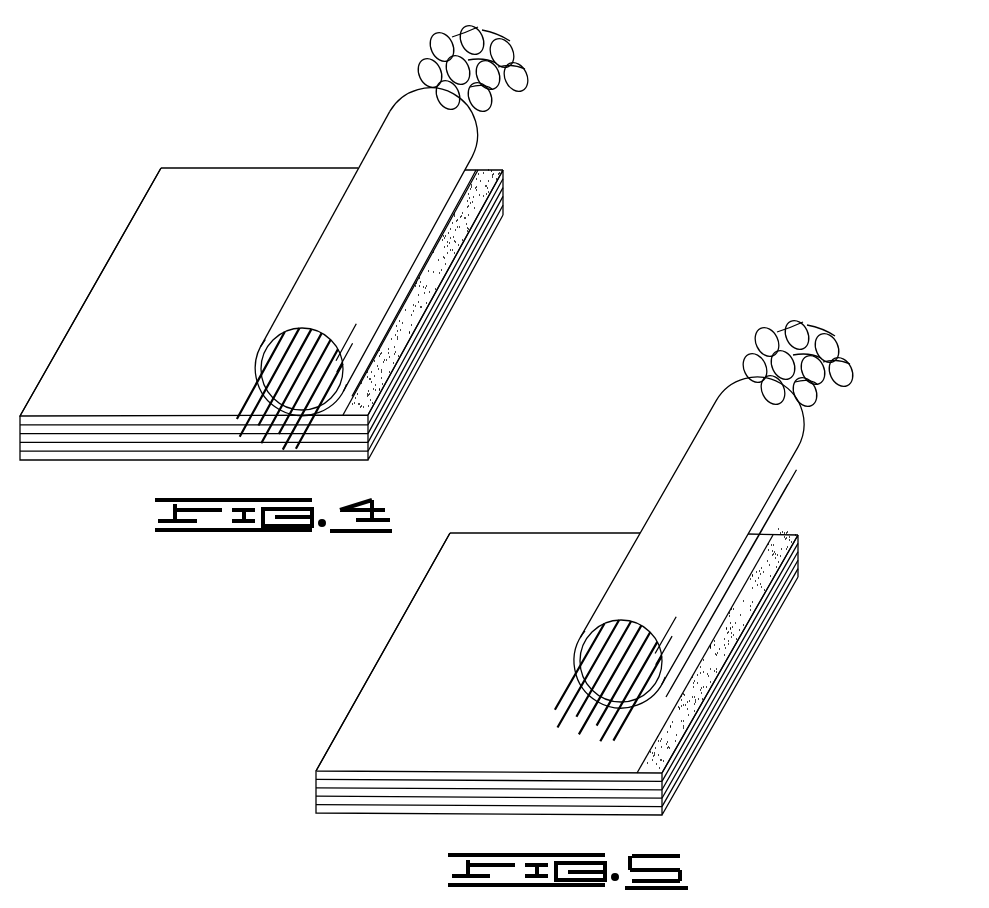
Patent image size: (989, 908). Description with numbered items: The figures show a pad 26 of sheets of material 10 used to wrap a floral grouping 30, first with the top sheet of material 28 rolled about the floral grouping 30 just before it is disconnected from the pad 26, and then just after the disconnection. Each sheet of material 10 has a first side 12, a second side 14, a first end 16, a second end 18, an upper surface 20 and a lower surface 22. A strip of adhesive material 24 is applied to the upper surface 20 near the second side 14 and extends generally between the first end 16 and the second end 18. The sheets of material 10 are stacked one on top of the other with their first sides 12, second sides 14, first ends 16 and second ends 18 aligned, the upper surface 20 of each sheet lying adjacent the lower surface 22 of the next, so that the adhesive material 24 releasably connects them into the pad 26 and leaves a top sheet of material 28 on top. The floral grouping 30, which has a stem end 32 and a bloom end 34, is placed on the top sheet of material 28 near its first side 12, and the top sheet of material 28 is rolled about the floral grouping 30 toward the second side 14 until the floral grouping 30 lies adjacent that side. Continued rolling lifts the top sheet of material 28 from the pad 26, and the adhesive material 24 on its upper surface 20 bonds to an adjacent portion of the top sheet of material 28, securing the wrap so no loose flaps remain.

In FIG. 4, the sheet of material 10 is at (190, 165).
In FIG. 5, the sheet of material 10 is at (305, 728).
In FIG. 4, the first side 12 is at (127, 228).
In FIG. 5, the first side 12 is at (420, 587).
In FIG. 4, the second side 14 is at (452, 262).
In FIG. 5, the second side 14 is at (805, 450).
In FIG. 4, the first end 16 is at (290, 168).
In FIG. 5, the first end 16 is at (730, 385).
In FIG. 4, the second end 18 is at (268, 347).
In FIG. 5, the second end 18 is at (585, 648).
In FIG. 4, the upper surface 20 is at (260, 380).
In FIG. 4, the lower surface 22 is at (330, 247).
In FIG. 4, the adhesive material 24 is at (497, 165).
In FIG. 5, the adhesive material 24 is at (797, 535).
In FIG. 4, the pad 26 is at (425, 370).
In FIG. 5, the pad 26 is at (382, 647).
In FIG. 4, the top sheet of material 28 is at (410, 135).
In FIG. 5, the top sheet of material 28 is at (713, 455).
In FIG. 4, the floral grouping 30 is at (505, 35).
In FIG. 5, the floral grouping 30 is at (808, 318).
In FIG. 4, the stem end 32 is at (247, 405).
In FIG. 5, the stem end 32 is at (570, 698).
In FIG. 4, the bloom end 34 is at (520, 75).
In FIG. 5, the bloom end 34 is at (825, 340).